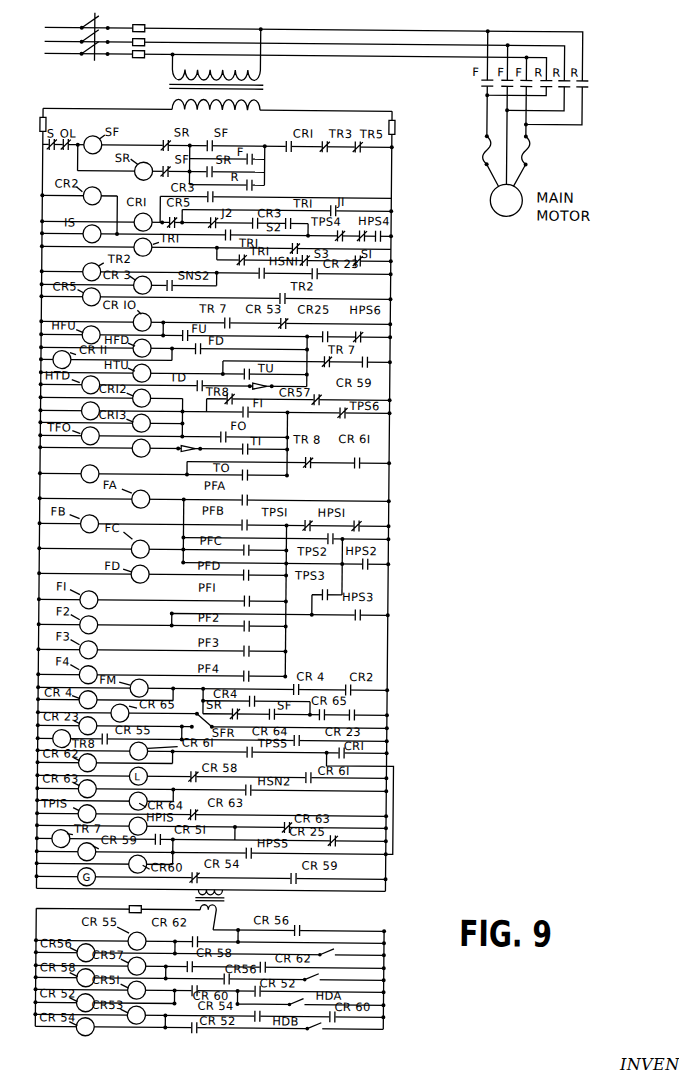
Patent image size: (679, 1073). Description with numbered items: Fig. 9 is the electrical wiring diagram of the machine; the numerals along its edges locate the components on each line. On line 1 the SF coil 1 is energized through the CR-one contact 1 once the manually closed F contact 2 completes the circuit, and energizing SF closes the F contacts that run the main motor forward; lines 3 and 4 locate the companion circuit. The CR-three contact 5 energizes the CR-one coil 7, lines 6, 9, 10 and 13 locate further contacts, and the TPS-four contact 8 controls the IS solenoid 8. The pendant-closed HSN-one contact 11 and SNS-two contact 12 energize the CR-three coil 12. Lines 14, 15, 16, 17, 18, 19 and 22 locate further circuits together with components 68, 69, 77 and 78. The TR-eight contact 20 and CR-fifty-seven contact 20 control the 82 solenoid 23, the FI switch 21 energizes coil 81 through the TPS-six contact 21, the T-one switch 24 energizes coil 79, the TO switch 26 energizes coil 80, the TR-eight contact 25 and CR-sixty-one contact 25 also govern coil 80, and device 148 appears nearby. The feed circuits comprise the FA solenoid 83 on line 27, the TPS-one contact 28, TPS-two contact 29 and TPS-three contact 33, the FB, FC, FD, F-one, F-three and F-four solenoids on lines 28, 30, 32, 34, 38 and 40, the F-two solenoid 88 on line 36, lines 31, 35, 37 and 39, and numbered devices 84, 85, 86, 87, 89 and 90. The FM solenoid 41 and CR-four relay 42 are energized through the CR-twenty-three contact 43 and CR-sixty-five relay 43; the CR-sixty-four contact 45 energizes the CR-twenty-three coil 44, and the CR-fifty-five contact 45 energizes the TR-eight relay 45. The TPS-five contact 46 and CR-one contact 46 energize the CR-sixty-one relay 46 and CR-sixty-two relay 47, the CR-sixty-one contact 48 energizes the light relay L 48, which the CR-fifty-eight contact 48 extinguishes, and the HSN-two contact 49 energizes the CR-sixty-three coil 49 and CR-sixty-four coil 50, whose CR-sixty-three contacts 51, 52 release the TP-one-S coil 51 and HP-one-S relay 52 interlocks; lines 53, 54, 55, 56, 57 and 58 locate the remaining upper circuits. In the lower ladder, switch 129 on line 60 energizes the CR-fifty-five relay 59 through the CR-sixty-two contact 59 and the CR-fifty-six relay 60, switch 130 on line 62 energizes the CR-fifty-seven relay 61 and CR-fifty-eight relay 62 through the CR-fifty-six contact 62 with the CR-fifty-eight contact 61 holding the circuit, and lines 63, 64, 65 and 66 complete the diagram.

The circuit line 1 is at (204, 145).
The circuit line 2 is at (141, 158).
The circuit line 3 is at (140, 170).
The circuit line 4 is at (140, 183).
The circuit line 5 is at (203, 196).
The circuit line 6 is at (203, 209).
The circuit line 7 is at (162, 221).
The circuit line 8 is at (203, 234).
The circuit line 9 is at (203, 247).
The circuit line 10 is at (201, 259).
The circuit line 11 is at (201, 272).
The circuit line 12 is at (113, 285).
The circuit line 13 is at (200, 297).
The circuit line 14 is at (200, 322).
The circuit line 15 is at (200, 335).
The circuit line 16 is at (159, 348).
The circuit line 17 is at (200, 360).
The circuit line 18 is at (159, 373).
The circuit line 19 is at (159, 385).
The circuit line 20 is at (200, 398).
The circuit line 21 is at (199, 411).
The circuit line 22 is at (96, 422).
The circuit line 23 is at (148, 436).
The circuit line 24 is at (148, 448).
The circuit line 25 is at (199, 461).
The circuit line 26 is at (148, 474).
The circuit line 27 is at (199, 499).
The circuit line 28 is at (198, 524).
The circuit line 29 is at (198, 537).
The circuit line 30 is at (147, 549).
The circuit line 31 is at (198, 561).
The circuit line 32 is at (147, 574).
The circuit line 33 is at (17, 586).
The circuit line 34 is at (147, 599).
The circuit line 35 is at (198, 612).
The circuit line 36 is at (147, 625).
The circuit line 37 is at (16, 636).
The circuit line 38 is at (146, 650).
The circuit line 39 is at (16, 661).
The circuit line 40 is at (146, 675).
The circuit line 41 is at (197, 688).
The circuit line 42 is at (159, 700).
The circuit line 43 is at (197, 713).
The circuit line 44 is at (197, 725).
The circuit line 45 is at (197, 738).
The circuit line 46 is at (197, 751).
The circuit line 47 is at (89, 762).
The circuit line 48 is at (196, 776).
The circuit line 49 is at (196, 789).
The circuit line 50 is at (90, 800).
The circuit line 51 is at (196, 814).
The circuit line 52 is at (196, 826).
The circuit line 53 is at (196, 839).
The circuit line 54 is at (196, 852).
The circuit line 55 is at (90, 863).
The circuit line 56 is at (195, 877).
The circuit line 57 is at (195, 889).
The circuit line 58 is at (195, 929).
The circuit line 59 is at (195, 941).
The circuit line 60 is at (195, 953).
The circuit line 61 is at (195, 966).
The circuit line 62 is at (195, 978).
The circuit line 63 is at (194, 990).
The circuit line 64 is at (194, 1003).
The circuit line 65 is at (194, 1015).
The circuit line 66 is at (194, 1027).
The head traverse up relay coil HTU 68 is at (149, 371).
The head traverse down relay coil HTD 69 is at (102, 383).
The head feed up relay coil HFU 77 is at (102, 333).
The head feed down relay coil HFD 78 is at (149, 346).
The solenoid valve coil 79 is at (136, 445).
The solenoid valve coil 80 is at (86, 468).
The solenoid valve coil 81 is at (84, 406).
The solenoid 82 is at (102, 435).
The FA solenoid 83 is at (149, 493).
The feed relay coil FB 84 is at (102, 520).
The feed relay coil FC 85 is at (149, 538).
The feed relay coil FD 86 is at (149, 572).
The feed relay coil F1 87 is at (102, 595).
The F2 solenoid 88 is at (102, 620).
The feed relay coil F3 89 is at (102, 645).
The feed relay coil F4 90 is at (102, 670).
The switch 129 is at (336, 950).
The switch 130 is at (321, 975).
The pressure switch 148 is at (209, 437).